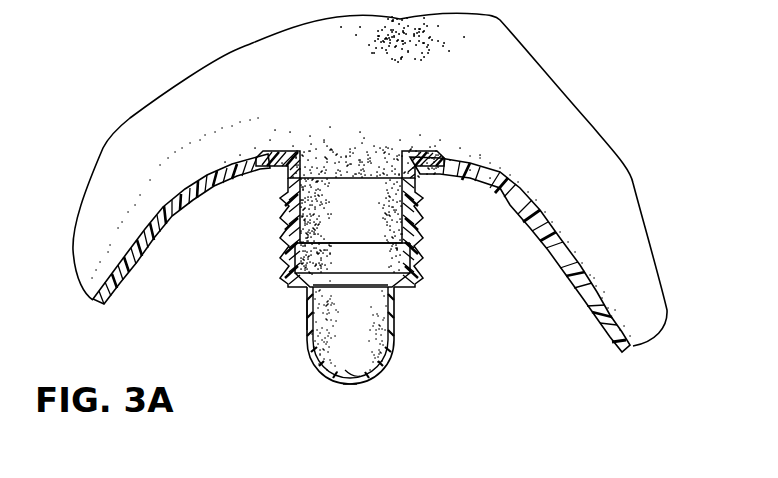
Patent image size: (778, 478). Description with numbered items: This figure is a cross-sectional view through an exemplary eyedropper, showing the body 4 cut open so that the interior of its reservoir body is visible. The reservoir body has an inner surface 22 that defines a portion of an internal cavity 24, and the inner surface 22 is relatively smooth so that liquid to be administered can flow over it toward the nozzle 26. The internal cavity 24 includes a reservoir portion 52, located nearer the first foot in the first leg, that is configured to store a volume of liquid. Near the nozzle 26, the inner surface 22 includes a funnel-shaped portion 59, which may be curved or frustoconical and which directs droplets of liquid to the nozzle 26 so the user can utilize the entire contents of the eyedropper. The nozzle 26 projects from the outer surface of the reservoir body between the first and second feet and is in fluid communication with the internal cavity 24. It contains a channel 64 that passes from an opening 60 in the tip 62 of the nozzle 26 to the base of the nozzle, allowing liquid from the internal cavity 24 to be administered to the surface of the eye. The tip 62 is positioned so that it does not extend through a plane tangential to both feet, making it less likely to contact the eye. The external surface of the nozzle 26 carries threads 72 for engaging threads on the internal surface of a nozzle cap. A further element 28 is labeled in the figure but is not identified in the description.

The body 4 is at (149, 254).
The inner surface 22 is at (511, 186).
The internal cavity 24 is at (370, 179).
The nozzle 26 is at (400, 338).
The pelvis 28 is at (56, 8).
The reservoir portion 52 is at (585, 143).
The funnel-shaped portion 59 is at (405, 150).
The opening 60 is at (350, 386).
The tip 62 is at (307, 329).
The channel 64 is at (352, 343).
The threads 72 is at (282, 245).